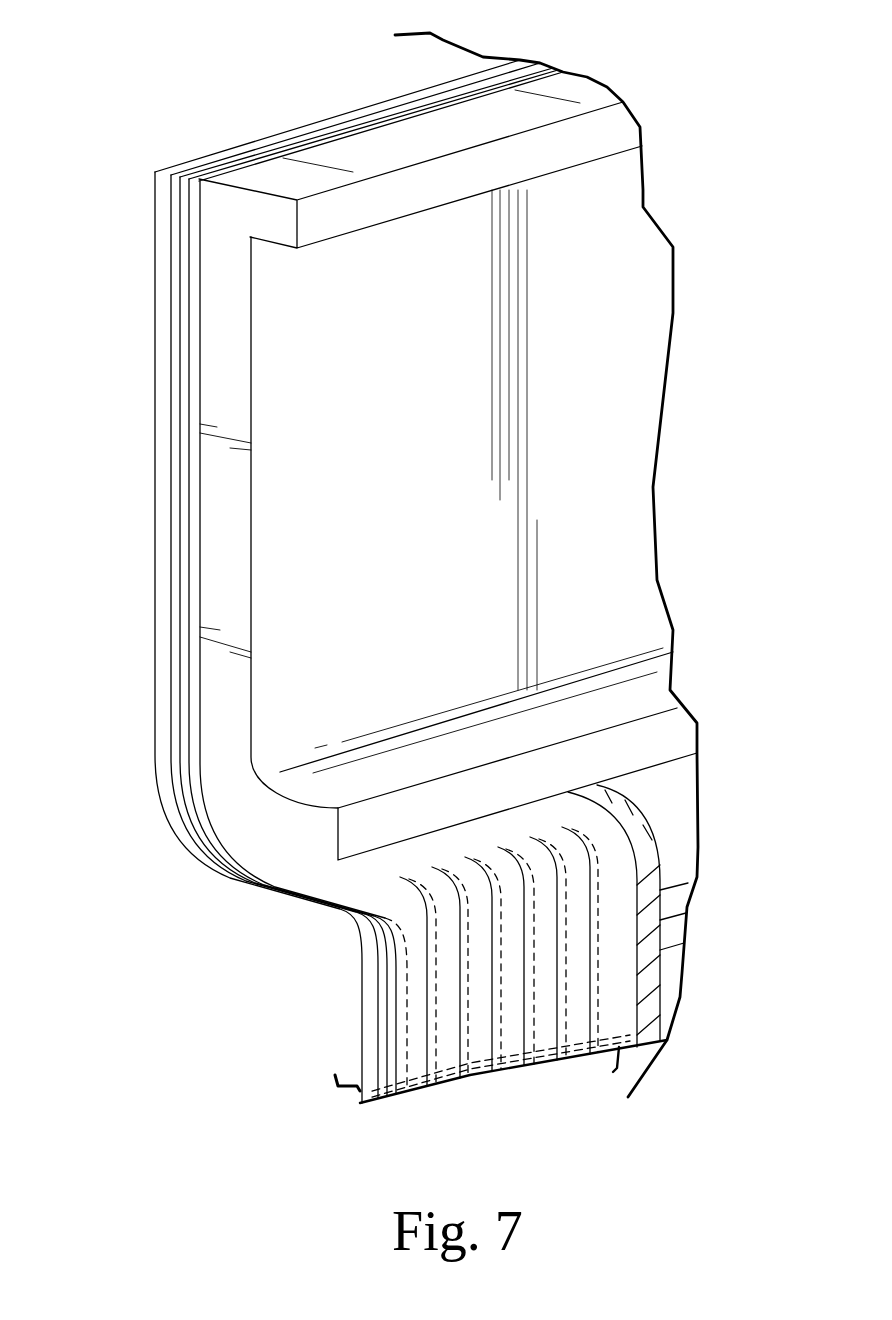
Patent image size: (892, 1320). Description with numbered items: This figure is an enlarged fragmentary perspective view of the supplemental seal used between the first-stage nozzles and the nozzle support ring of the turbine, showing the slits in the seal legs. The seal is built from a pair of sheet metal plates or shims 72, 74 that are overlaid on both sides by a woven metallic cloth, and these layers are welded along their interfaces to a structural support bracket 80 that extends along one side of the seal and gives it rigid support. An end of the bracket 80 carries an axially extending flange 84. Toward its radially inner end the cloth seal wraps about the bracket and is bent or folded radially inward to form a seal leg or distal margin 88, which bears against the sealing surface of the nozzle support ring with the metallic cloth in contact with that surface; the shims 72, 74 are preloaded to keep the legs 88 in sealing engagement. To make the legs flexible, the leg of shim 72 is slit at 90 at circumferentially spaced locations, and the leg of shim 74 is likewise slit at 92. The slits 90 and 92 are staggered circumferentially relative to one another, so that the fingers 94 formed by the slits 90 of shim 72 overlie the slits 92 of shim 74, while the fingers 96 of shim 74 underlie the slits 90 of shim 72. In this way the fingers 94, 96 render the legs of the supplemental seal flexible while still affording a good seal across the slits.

The sheet metal shim 72 is at (305, 870).
The sheet metal shim 74 is at (352, 905).
The structural support bracket 80 is at (305, 354).
The axially extending flange 84 is at (353, 205).
The seal leg 88 is at (682, 878).
The slit 90 is at (402, 1082).
The slit 92 is at (517, 1075).
The finger 94 is at (465, 1077).
The finger 96 is at (373, 1070).